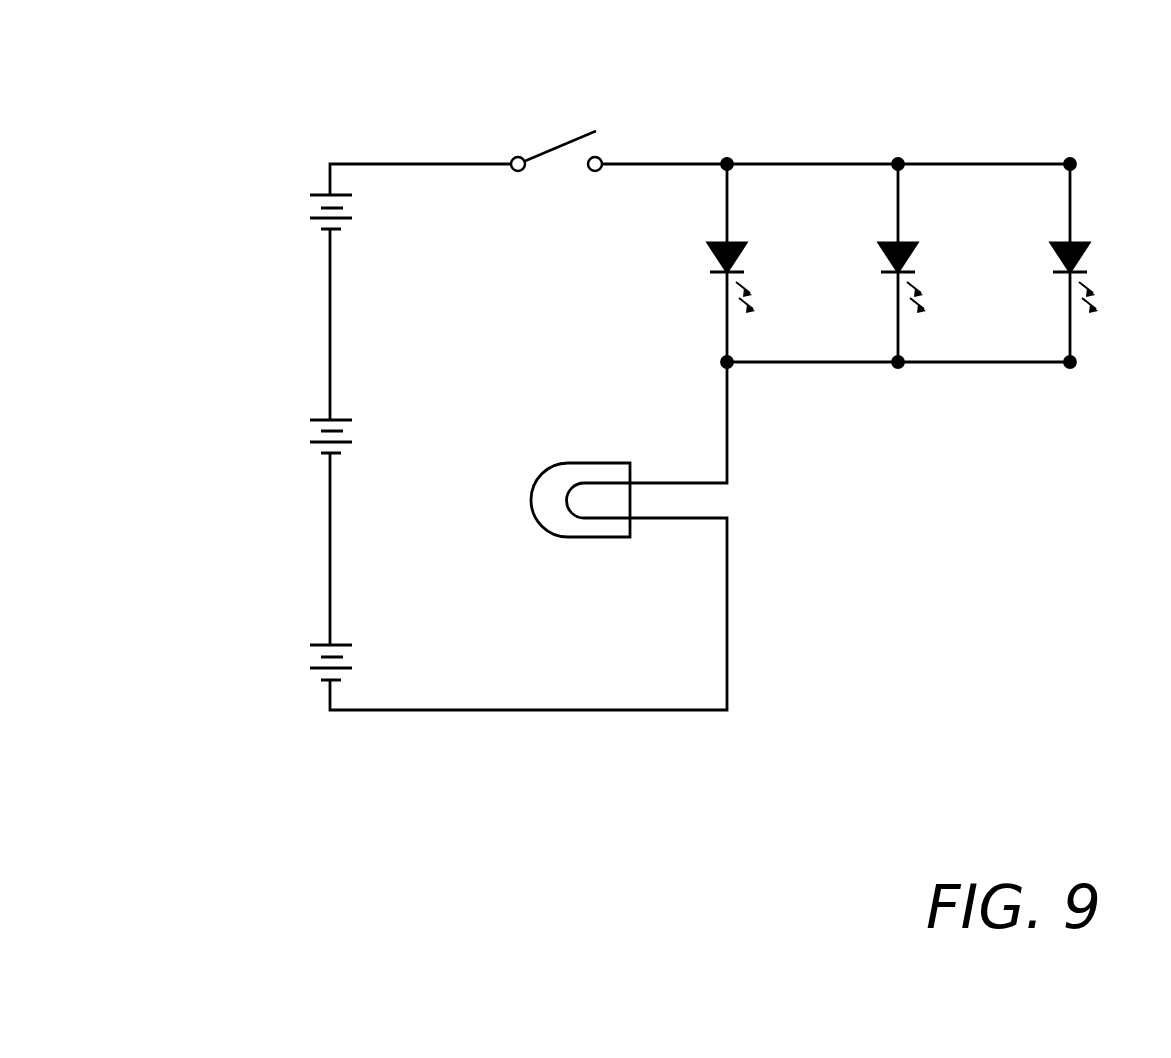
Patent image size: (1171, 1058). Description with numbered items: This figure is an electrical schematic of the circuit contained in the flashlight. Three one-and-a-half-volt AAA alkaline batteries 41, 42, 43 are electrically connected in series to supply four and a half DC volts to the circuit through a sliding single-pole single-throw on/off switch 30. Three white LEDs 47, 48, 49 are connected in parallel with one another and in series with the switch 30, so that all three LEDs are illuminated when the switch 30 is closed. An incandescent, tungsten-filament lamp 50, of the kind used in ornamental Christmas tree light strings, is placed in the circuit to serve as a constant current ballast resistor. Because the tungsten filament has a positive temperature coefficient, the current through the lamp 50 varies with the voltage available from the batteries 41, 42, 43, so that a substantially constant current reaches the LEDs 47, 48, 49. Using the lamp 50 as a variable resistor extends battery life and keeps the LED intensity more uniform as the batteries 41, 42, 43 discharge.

The on/off switch 30 is at (577, 135).
The battery 41 is at (282, 203).
The battery 42 is at (282, 433).
The battery 43 is at (282, 661).
The white LED 47 is at (727, 197).
The white LED 48 is at (898, 197).
The white LED 49 is at (1070, 197).
The incandescent lamp 50 is at (582, 538).